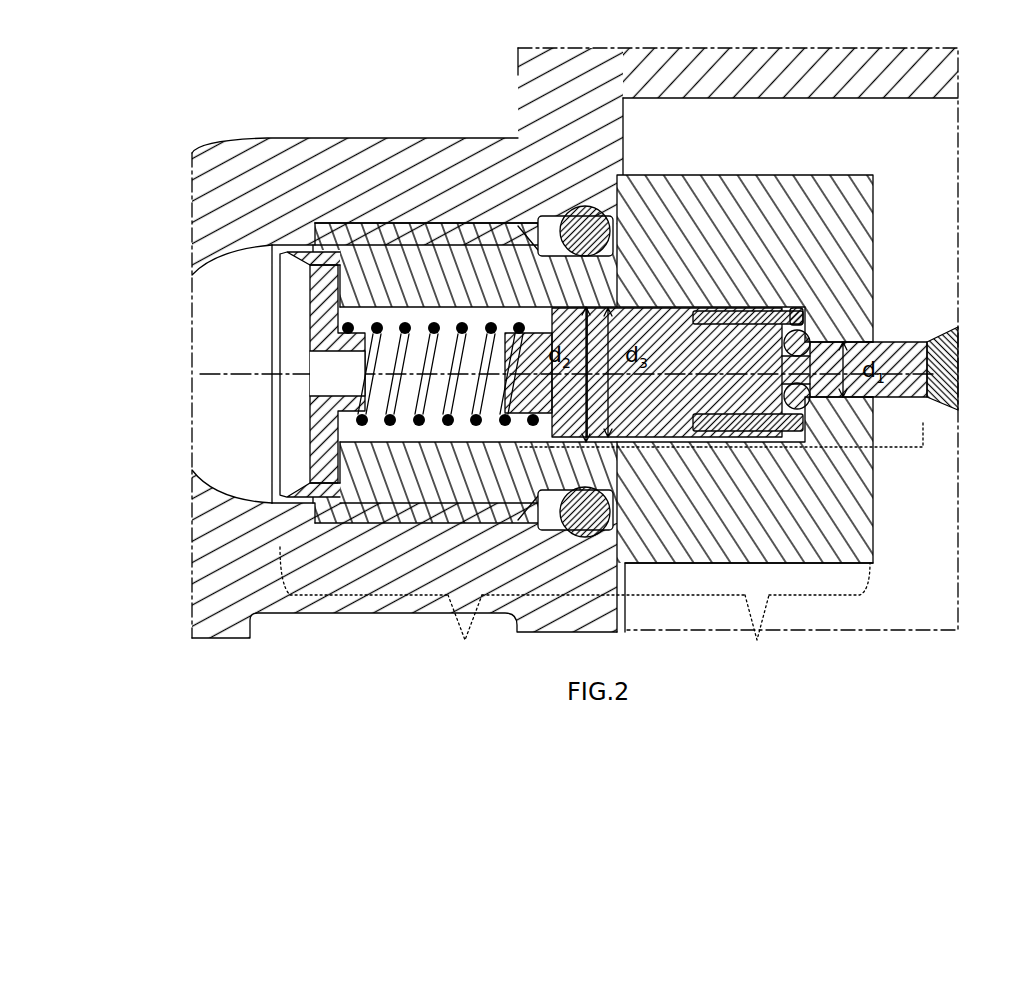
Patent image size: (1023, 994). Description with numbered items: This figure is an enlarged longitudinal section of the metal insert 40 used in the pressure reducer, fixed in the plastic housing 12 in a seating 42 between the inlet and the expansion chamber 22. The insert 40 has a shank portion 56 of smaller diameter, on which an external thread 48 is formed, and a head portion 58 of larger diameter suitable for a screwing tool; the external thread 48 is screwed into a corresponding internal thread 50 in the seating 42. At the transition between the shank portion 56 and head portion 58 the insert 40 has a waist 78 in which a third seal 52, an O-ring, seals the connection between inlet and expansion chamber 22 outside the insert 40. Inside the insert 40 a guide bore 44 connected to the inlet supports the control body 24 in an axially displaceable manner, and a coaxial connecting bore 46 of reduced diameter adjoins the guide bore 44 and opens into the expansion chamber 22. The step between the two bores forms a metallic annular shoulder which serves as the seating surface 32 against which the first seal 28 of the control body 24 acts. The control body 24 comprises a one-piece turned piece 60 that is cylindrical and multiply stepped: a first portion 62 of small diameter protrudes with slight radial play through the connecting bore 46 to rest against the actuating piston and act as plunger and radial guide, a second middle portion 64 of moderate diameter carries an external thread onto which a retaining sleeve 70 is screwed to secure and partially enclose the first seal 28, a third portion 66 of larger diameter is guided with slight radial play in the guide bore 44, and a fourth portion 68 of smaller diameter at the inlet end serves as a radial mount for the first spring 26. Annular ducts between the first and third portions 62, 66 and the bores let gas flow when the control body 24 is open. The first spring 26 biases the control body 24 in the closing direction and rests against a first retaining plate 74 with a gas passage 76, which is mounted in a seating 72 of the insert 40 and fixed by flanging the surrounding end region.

The housing 12 is at (204, 548).
The expansion chamber 22 is at (928, 161).
The control body 24 is at (640, 294).
The first spring 26 is at (397, 395).
The first seal 28 is at (800, 400).
The seating surface 32 is at (793, 310).
The insert 40 is at (677, 575).
The seating 42 is at (463, 253).
The guide bore 44 is at (721, 302).
The connecting bore 46 is at (867, 343).
The external thread 48 is at (407, 232).
The internal thread 50 is at (357, 230).
The third seal 52 is at (583, 228).
The shank portion 56 is at (463, 613).
The head portion 58 is at (757, 597).
The turned piece 60 is at (683, 412).
The first portion 62 is at (857, 458).
The second portion 64 is at (741, 458).
The third portion 66 is at (626, 458).
The fourth portion 68 is at (529, 458).
The retaining sleeve 70 is at (795, 319).
The seating 72 is at (297, 268).
The first retaining plate 74 is at (320, 432).
The gas passage 76 is at (324, 370).
The waist 78 is at (549, 507).